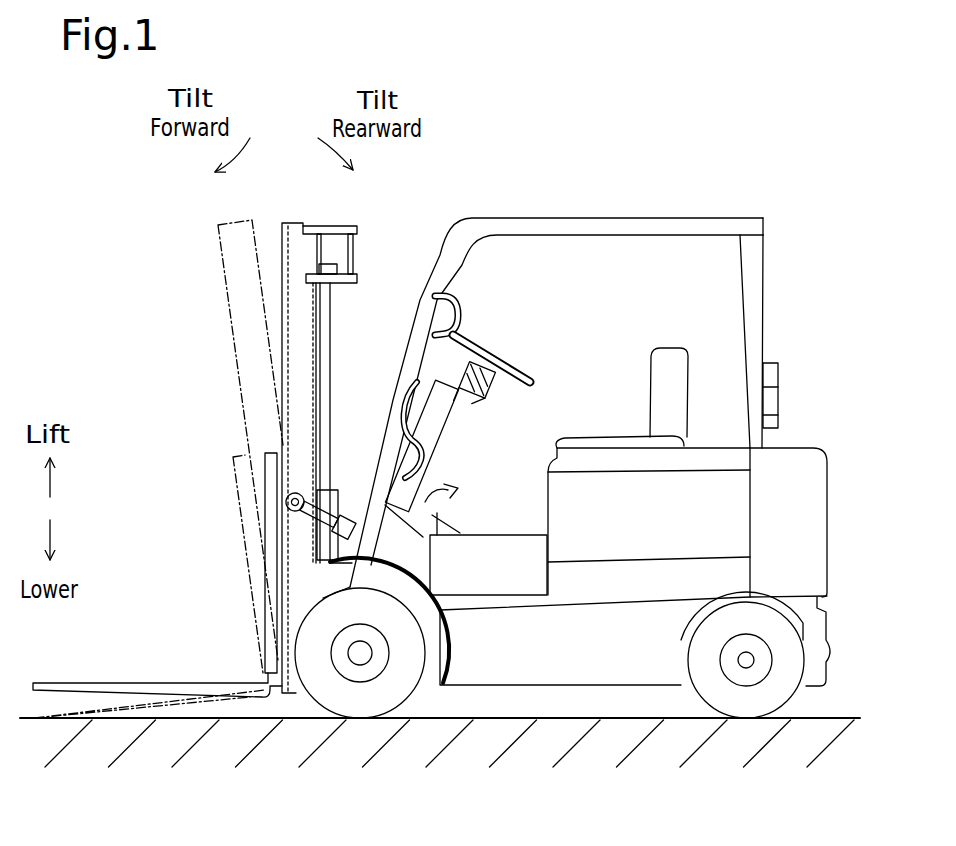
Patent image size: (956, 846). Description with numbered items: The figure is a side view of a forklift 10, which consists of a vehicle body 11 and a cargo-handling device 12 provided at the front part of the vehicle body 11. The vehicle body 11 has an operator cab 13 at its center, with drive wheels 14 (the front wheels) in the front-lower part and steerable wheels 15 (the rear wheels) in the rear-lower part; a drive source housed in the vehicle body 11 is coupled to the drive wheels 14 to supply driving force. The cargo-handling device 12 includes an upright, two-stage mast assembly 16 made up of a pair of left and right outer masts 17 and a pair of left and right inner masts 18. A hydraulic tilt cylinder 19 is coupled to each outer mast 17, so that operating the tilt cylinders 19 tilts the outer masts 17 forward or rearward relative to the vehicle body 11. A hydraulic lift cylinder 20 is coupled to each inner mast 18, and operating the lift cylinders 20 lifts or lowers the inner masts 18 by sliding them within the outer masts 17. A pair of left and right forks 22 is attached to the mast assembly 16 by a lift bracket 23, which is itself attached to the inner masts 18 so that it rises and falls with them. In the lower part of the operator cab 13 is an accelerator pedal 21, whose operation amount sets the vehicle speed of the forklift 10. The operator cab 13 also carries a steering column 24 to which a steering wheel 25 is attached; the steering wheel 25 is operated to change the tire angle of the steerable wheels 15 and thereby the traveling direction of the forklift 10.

The forklift 10 is at (469, 160).
The vehicle body 11 is at (809, 240).
The cargo-handling device 12 is at (138, 305).
The operator cab 13 is at (579, 248).
The drive wheels (front wheels) 14 is at (366, 719).
The steerable wheels (rear wheels) 15 is at (748, 719).
The mast assembly 16 is at (130, 337).
The outer mast 17 is at (283, 365).
The inner mast 18 is at (283, 327).
The tilt cylinder 19 is at (360, 502).
The lift cylinder 20 is at (330, 333).
The accelerator pedal 21 is at (460, 492).
The fork 22 is at (130, 683).
The lift bracket 23 is at (272, 580).
The steering column 24 is at (453, 430).
The steering wheel 25 is at (470, 345).